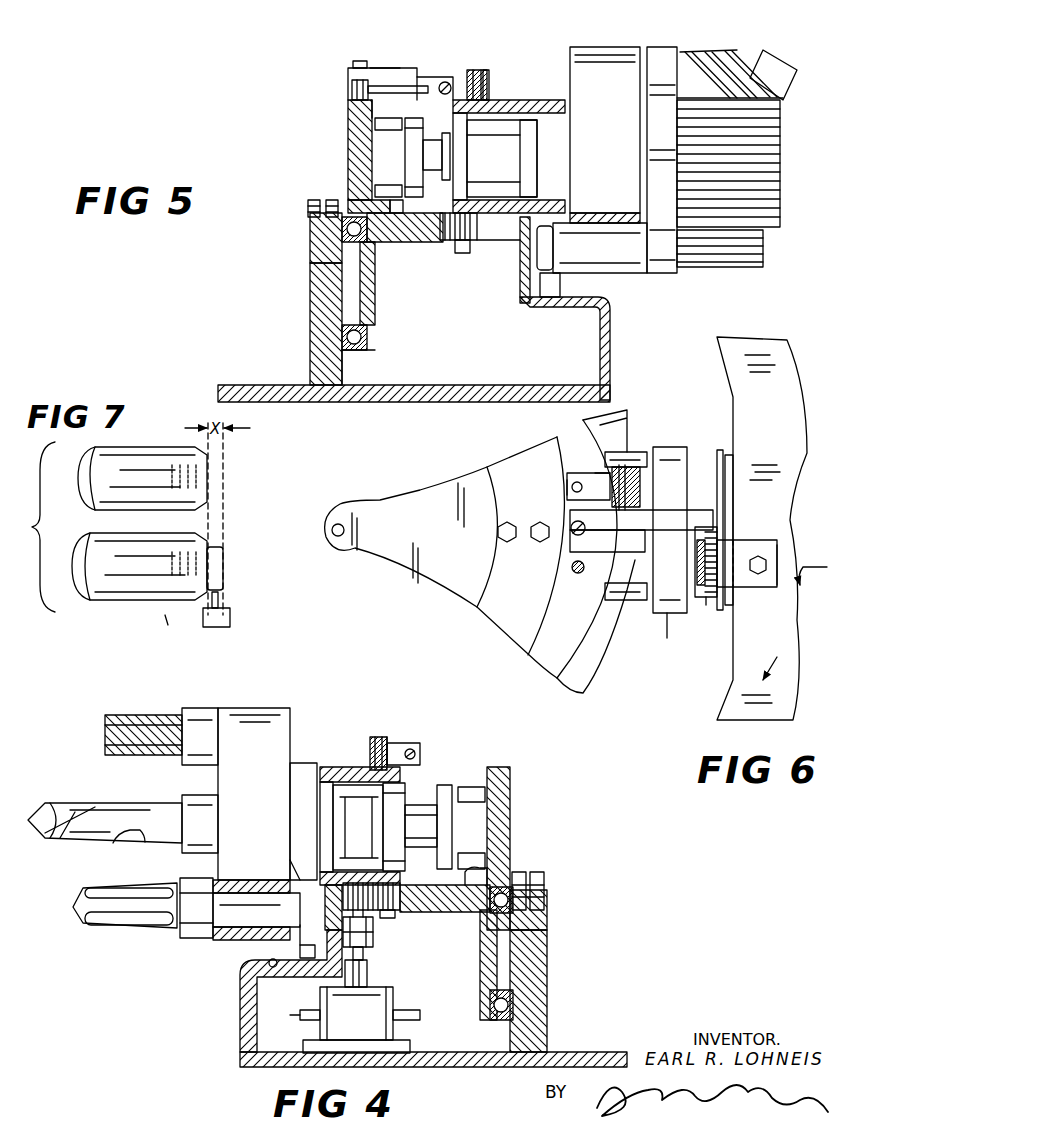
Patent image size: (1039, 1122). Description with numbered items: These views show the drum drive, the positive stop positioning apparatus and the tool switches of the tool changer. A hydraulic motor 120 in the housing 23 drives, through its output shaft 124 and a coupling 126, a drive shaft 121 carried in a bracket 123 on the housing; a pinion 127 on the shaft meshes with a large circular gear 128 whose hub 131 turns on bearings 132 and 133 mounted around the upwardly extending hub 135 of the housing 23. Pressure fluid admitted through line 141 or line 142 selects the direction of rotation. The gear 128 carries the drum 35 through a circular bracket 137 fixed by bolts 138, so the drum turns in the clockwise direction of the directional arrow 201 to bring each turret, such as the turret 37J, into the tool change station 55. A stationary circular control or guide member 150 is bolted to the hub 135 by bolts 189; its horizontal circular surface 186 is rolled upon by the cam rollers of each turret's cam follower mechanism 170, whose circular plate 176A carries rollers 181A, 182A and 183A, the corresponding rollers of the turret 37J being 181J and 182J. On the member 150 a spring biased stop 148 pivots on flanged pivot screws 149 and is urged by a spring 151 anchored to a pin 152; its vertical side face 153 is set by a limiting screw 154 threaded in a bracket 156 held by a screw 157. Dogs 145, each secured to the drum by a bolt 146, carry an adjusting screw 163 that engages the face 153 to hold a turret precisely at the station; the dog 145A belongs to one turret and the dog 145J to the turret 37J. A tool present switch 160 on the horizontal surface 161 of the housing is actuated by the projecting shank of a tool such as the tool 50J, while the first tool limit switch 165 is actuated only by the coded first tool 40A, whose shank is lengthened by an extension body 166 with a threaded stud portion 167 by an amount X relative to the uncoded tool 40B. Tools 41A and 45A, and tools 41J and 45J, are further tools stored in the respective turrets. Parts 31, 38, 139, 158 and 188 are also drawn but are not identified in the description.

In FIG. 5, the housing 23 is at (612, 322).
In FIG. 6, the housing 23 is at (372, 568).
In FIG. 4, the housing 23 is at (247, 1020).
In FIG. 5, the base plate 31 is at (395, 400).
In FIG. 4, the base plate 31 is at (270, 1068).
In FIG. 5, the drum 35 is at (505, 100).
In FIG. 6, the drum 35 is at (760, 348).
In FIG. 4, the drum 35 is at (400, 774).
In FIG. 5, the turret 37J is at (600, 47).
In FIG. 4, the turret 37J is at (237, 708).
In FIG. 4, the collar 38 is at (228, 898).
In FIG. 5, the tool 40A is at (763, 258).
In FIG. 7, the tool 40A is at (115, 590).
In FIG. 7, the tool 40B is at (97, 457).
In FIG. 5, the tool 41A is at (770, 157).
In FIG. 4, the tool 41J is at (115, 715).
In FIG. 5, the cutting tool 45A is at (782, 65).
In FIG. 4, the drill 45J is at (95, 815).
In FIG. 4, the tool 50J is at (80, 915).
In FIG. 6, the tool change station 55 is at (820, 580).
In FIG. 4, the hydraulic motor 120 is at (390, 1002).
In FIG. 4, the drive shaft 121 is at (373, 925).
In FIG. 4, the bracket 123 is at (373, 940).
In FIG. 4, the output shaft 124 is at (367, 978).
In FIG. 4, the coupling 126 is at (322, 992).
In FIG. 4, the pinion 127 is at (333, 903).
In FIG. 5, the large circular gear 128 is at (448, 243).
In FIG. 4, the large circular gear 128 is at (405, 888).
In FIG. 5, the hub 131 is at (372, 292).
In FIG. 4, the hub 131 is at (500, 992).
In FIG. 5, the bearing 132 is at (312, 240).
In FIG. 4, the bearing 132 is at (528, 918).
In FIG. 5, the bearing 133 is at (372, 338).
In FIG. 4, the bearing 133 is at (514, 1012).
In FIG. 5, the hub 135 is at (316, 316).
In FIG. 4, the hub 135 is at (542, 975).
In FIG. 5, the circular bracket 137 is at (472, 228).
In FIG. 4, the circular bracket 137 is at (345, 881).
In FIG. 5, the bolts 138 is at (463, 254).
In FIG. 4, the bolts 138 is at (396, 915).
In FIG. 4, the flange 139 is at (292, 862).
In FIG. 4, the line 141 is at (305, 1017).
In FIG. 4, the line 142 is at (420, 1015).
In FIG. 5, the dogs 145 is at (482, 68).
In FIG. 6, the dogs 145 is at (760, 533).
In FIG. 4, the dogs 145 is at (420, 734).
In FIG. 5, the dog 145A is at (489, 80).
In FIG. 6, the dog 145A is at (777, 583).
In FIG. 4, the gear hub 145J is at (370, 750).
In FIG. 6, the bolt 146 is at (777, 562).
In FIG. 4, the bolt 146 is at (380, 737).
In FIG. 5, the stop 148 is at (388, 67).
In FIG. 6, the stop 148 is at (562, 557).
In FIG. 5, the flanged pivot screws 149 is at (360, 61).
In FIG. 6, the flanged pivot screws 149 is at (586, 530).
In FIG. 5, the turret position control member 150 is at (348, 160).
In FIG. 6, the turret position control member 150 is at (490, 610).
In FIG. 4, the turret position control member 150 is at (510, 806).
In FIG. 5, the spring 151 is at (387, 90).
In FIG. 6, the spring 151 is at (613, 565).
In FIG. 5, the pin 152 is at (352, 85).
In FIG. 6, the pin 152 is at (573, 570).
In FIG. 5, the vertical side face 153 is at (420, 75).
In FIG. 6, the vertical side face 153 is at (650, 532).
In FIG. 6, the limiting screw 154 is at (598, 475).
In FIG. 6, the bracket 156 is at (565, 480).
In FIG. 6, the screw 157 is at (572, 487).
In FIG. 6, the plate 158 is at (733, 510).
In FIG. 4, the tool present switch 160 is at (300, 952).
In FIG. 5, the horizontally extending surface 161 is at (527, 303).
In FIG. 4, the horizontally extending surface 161 is at (275, 968).
In FIG. 5, the adjusting screw 163 is at (448, 82).
In FIG. 6, the adjusting screw 163 is at (707, 600).
In FIG. 5, the first tool limit switch 165 is at (562, 287).
In FIG. 7, the first tool limit switch 165 is at (223, 628).
In FIG. 5, the extension body 166 is at (570, 246).
In FIG. 7, the extension body 166 is at (223, 568).
In FIG. 7, the stud portion 167 is at (157, 620).
In FIG. 5, the cam follower mechanism 170 is at (432, 186).
In FIG. 6, the cam follower mechanism 170 is at (667, 640).
In FIG. 4, the cam follower mechanism 170 is at (444, 778).
In FIG. 5, the disc 176A is at (416, 118).
In FIG. 6, the disc 176A is at (676, 447).
In FIG. 6, the lower clamp 181A is at (625, 600).
In FIG. 4, the lower clamp 181J is at (487, 860).
In FIG. 5, the upper clamp 182A is at (375, 125).
In FIG. 6, the upper clamp 182A is at (620, 452).
In FIG. 4, the upper clamp 182J is at (487, 793).
In FIG. 5, the lower clamp 183A is at (375, 190).
In FIG. 5, the horizontal circular surface 186 is at (403, 205).
In FIG. 6, the horizontal circular surface 186 is at (600, 427).
In FIG. 4, the horizontal circular surface 186 is at (487, 876).
In FIG. 5, the screw 188 is at (308, 208).
In FIG. 5, the bolts 189 is at (326, 215).
In FIG. 6, the bolts 189 is at (500, 540).
In FIG. 4, the bolts 189 is at (547, 878).
In FIG. 6, the directional arrow 201 is at (777, 657).